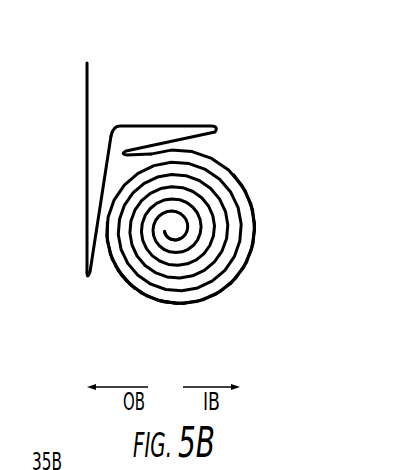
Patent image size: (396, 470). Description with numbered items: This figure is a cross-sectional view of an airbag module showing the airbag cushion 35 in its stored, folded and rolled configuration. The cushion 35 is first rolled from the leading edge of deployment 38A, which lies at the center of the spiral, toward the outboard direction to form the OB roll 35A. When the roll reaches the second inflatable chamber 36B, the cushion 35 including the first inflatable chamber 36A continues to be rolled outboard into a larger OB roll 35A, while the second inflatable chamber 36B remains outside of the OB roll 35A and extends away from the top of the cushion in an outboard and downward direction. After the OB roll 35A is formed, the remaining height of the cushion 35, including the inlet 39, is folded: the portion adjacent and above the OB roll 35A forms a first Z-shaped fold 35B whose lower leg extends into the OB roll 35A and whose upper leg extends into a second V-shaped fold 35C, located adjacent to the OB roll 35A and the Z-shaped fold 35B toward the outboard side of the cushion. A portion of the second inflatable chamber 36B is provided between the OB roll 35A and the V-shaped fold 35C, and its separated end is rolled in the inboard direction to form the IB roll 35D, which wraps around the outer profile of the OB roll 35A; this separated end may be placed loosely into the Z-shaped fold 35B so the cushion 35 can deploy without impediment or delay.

The airbag cushion 35 is at (148, 197).
The OB roll 35A is at (145, 307).
The Z-shaped fold 35B is at (188, 109).
The V-shaped fold 35C is at (73, 204).
The IB roll 35D is at (196, 311).
The first inflatable chamber 36A is at (240, 213).
The second inflatable chamber 36B is at (223, 291).
The leading edge of deployment 38A is at (172, 231).
The inlet 39 is at (80, 66).